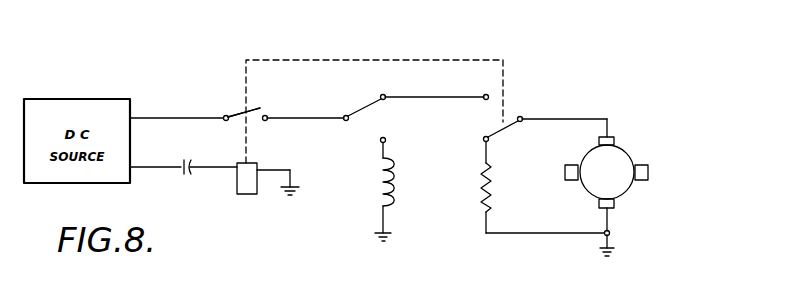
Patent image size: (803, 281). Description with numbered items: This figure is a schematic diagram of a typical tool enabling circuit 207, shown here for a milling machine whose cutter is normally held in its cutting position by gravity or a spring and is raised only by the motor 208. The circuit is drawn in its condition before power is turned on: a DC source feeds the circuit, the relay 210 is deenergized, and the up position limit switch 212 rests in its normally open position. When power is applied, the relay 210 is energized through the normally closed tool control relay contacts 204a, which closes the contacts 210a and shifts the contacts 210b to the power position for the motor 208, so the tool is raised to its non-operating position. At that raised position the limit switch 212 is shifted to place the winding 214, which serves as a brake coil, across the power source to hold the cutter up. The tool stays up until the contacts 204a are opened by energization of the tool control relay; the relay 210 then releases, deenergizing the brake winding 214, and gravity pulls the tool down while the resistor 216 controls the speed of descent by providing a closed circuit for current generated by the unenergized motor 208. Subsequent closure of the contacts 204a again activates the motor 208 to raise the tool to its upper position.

The tool enabling circuit 207 is at (226, 99).
The contacts 210a is at (250, 110).
The up position limit switch 212 is at (366, 104).
The tool control relay contacts 204a is at (206, 148).
The relay 210 is at (237, 196).
The winding 214 is at (397, 170).
The contacts 210b is at (497, 137).
The motor 208 is at (627, 152).
The resistor 216 is at (481, 198).